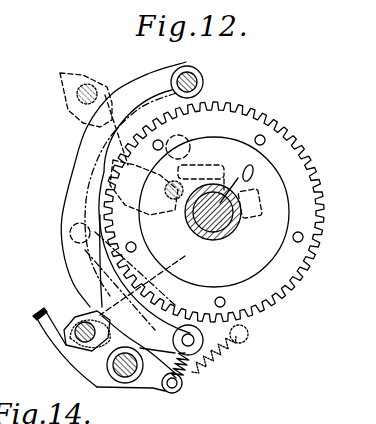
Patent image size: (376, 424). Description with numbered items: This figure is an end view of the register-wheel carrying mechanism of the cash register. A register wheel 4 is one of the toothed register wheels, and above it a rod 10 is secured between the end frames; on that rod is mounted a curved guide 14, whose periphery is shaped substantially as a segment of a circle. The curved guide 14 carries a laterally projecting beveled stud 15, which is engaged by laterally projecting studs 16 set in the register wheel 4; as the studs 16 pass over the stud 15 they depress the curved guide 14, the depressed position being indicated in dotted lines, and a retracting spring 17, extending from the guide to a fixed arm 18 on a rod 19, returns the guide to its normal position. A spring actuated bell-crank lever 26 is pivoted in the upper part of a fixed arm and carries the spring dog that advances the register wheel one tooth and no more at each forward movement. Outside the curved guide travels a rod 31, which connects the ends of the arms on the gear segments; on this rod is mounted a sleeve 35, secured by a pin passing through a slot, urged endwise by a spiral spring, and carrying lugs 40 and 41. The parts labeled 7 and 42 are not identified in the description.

The register wheel 4 is at (297, 154).
The hub 7 is at (133, 231).
The rod 10 is at (204, 82).
The curved guide 14 is at (161, 330).
The laterally projecting beveled stud 15 is at (166, 140).
The laterally projecting studs 16 is at (155, 141).
The retracting spring 17 is at (195, 377).
The fixed arm 18 is at (168, 392).
The rod 19 is at (125, 370).
The spring actuated bell-crank lever 26 is at (153, 283).
The rod 31 is at (88, 337).
The sleeve 35 is at (86, 314).
The lug 40 is at (100, 300).
The lug 41 is at (58, 347).
The rod end 42 is at (41, 310).